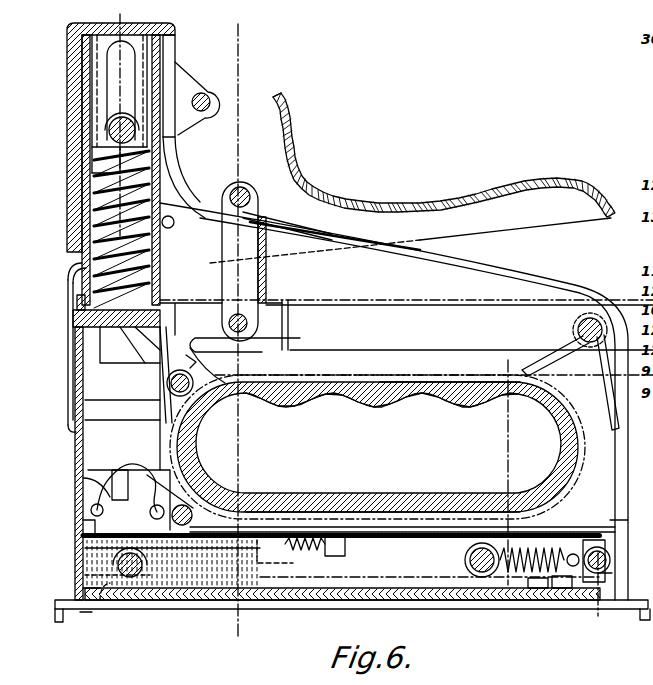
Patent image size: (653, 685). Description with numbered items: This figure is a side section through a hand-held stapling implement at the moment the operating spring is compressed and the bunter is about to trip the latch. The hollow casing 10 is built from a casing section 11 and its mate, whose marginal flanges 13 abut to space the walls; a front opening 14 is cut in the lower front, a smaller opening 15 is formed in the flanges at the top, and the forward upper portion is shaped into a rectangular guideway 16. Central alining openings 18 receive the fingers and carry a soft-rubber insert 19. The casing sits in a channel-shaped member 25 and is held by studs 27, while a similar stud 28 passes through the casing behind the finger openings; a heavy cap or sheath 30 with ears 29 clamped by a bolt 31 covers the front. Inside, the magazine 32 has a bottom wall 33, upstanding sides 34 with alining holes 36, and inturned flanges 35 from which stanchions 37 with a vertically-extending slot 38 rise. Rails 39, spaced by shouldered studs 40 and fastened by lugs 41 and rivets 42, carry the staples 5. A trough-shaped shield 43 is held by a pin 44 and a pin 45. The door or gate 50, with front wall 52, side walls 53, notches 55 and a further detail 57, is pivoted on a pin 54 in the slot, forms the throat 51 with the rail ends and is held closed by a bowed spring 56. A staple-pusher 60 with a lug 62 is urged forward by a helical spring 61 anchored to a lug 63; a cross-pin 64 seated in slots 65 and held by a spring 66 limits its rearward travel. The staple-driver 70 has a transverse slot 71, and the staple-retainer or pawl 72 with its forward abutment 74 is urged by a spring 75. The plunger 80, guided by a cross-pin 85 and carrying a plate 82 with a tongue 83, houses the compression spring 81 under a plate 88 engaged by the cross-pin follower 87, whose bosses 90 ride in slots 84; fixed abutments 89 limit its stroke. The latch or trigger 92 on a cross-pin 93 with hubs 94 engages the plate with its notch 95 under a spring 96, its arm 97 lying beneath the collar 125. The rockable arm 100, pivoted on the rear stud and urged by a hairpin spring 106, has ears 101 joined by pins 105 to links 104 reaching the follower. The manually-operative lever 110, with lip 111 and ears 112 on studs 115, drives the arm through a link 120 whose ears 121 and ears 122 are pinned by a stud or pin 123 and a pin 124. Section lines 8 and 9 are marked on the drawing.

The magazine 5 is at (86, 558).
The section line 8- 8 is at (242, 30).
The section line 9- 9 is at (514, 362).
The hollow casing 10 is at (560, 272).
The casing section 11 is at (500, 263).
The marginal flanges 13 is at (363, 246).
The opening 14 is at (68, 428).
The smaller opening 15 is at (276, 230).
The rectangular guideway 16 is at (172, 45).
The alining openings 18 is at (412, 378).
The insert 19 is at (414, 482).
The channel-shaped member 25 is at (415, 600).
The studs 27 is at (248, 455).
The stud 28 is at (590, 348).
The ears 29 is at (189, 128).
The cap or sheath 30 is at (72, 70).
The bolt 31 is at (206, 97).
The magazine 32 is at (612, 522).
The bottom wall 33 is at (350, 600).
The upstanding sides 34 is at (600, 546).
The flanges 35 is at (320, 527).
The alining holes 36 is at (612, 567).
The stanchions 37 is at (240, 505).
The vertically-extending slot 38 is at (178, 505).
The rails 39 is at (444, 505).
The shouldered studs 40 is at (130, 578).
The lugs 41 is at (534, 590).
The rivets 42 is at (562, 590).
The trough-shaped shield 43 is at (85, 527).
The pin 44 is at (110, 492).
The pin 45 is at (155, 518).
The door or gate 50 is at (84, 593).
The throat 51 is at (60, 622).
The front wall 52 is at (84, 575).
The side walls 53 is at (92, 468).
The pin 54 is at (122, 468).
The notches 55 is at (108, 605).
The bowed spring 56 is at (190, 440).
The foot tab 57 is at (84, 613).
The staple-pusher 60 is at (293, 563).
The helical spring 61 is at (412, 577).
The lug 62 is at (346, 542).
The lug 63 is at (640, 615).
The cross-pin 64 is at (573, 553).
The slots 65 is at (598, 540).
The spring 66 is at (540, 548).
The staple-driver 70 is at (73, 385).
The transverse slot 71 is at (77, 335).
The staple-retainer or pawl 72 is at (128, 488).
The forward abutment 74 is at (90, 510).
The spring 75 is at (85, 477).
The plunger 80 is at (88, 288).
The compression spring 81 is at (94, 207).
The plate 82 is at (148, 345).
The tongue 83 is at (74, 318).
The slots 84 is at (107, 89).
The cross-pin 85 is at (170, 228).
The cross-pin follower 87 is at (115, 128).
The plate 88 is at (92, 147).
The abutments 89 is at (107, 400).
The bosses 90 is at (112, 125).
The latch or trigger 92 is at (218, 360).
The cross-pin 93 is at (160, 418).
The hubs 94 is at (210, 418).
The notch 95 is at (186, 357).
The spring 96 is at (168, 382).
The arm 97 is at (262, 348).
The rockable arm 100 is at (404, 306).
The ears 101 is at (174, 304).
The links 104 is at (90, 235).
The pins 105 is at (117, 340).
The hairpin spring 106 is at (560, 340).
The manually-operative lever 110 is at (432, 196).
The lip 111 is at (274, 92).
The ears 112 is at (80, 266).
The studs 115 is at (166, 197).
The link 120 is at (266, 282).
The ears 121 is at (257, 192).
The ears 122 is at (288, 312).
The stud or pin 123 is at (242, 195).
The pin 124 is at (248, 323).
The collar 125 is at (239, 314).